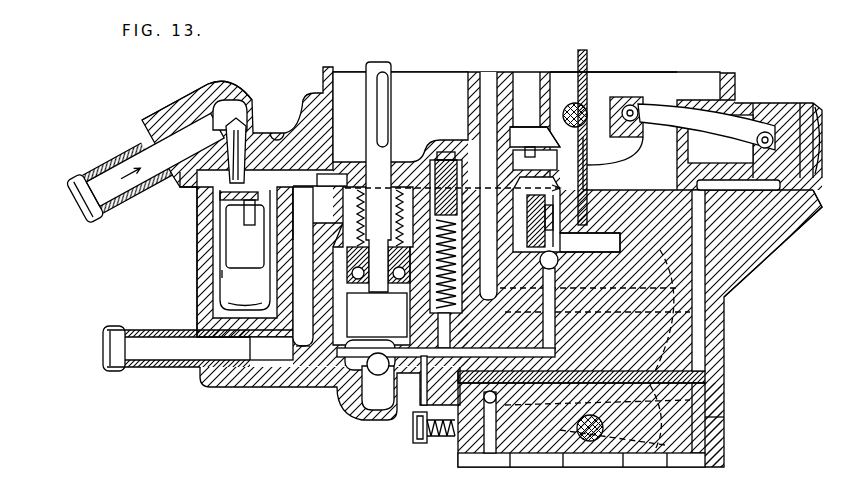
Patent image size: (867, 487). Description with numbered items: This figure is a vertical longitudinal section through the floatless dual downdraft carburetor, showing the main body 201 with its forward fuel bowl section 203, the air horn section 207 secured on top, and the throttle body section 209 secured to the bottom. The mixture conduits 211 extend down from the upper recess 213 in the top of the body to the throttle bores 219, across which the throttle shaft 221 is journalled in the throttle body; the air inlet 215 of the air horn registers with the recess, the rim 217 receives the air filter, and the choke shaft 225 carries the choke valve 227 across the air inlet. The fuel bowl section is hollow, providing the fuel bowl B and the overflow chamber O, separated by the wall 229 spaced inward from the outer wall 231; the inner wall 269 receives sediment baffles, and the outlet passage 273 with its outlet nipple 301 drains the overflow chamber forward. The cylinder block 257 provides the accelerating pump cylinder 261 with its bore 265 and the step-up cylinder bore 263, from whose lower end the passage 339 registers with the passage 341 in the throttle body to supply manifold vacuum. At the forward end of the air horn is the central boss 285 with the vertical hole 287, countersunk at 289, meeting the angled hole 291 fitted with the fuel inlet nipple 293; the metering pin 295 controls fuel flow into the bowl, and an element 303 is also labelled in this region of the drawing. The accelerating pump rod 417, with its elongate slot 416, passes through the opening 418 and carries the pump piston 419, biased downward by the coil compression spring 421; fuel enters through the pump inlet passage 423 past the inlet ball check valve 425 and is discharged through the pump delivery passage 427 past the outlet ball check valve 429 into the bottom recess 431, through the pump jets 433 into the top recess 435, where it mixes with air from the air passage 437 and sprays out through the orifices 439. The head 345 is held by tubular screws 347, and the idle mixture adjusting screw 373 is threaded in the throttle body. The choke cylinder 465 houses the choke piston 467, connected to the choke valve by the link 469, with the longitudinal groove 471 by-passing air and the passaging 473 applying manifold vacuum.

The main body 201 is at (738, 297).
The fuel bowl section 203 is at (191, 258).
The air horn section 207 is at (302, 93).
The throttle body section 209 is at (723, 440).
The mixture conduit 211 is at (697, 355).
The upper recess 213 is at (642, 210).
The air inlet 215 is at (663, 92).
The rim 217 is at (737, 83).
The throttle bore 219 is at (690, 400).
The throttle shaft 221 is at (590, 453).
The choke shaft 225 is at (587, 113).
The choke valve 227 is at (587, 53).
The wall 229 is at (277, 288).
The outer wall 231 is at (198, 232).
The cylinder block 257 is at (350, 260).
The accelerating pump cylinder 261 is at (337, 247).
The bore of the step-up cylinder 263 is at (377, 315).
The bore of the pump cylinder 265 is at (347, 323).
The inner wall 269 is at (293, 187).
The outlet passage 273 is at (267, 360).
The central boss 285 is at (233, 80).
The vertical cylindrical hole 287 is at (247, 110).
The countersink 289 is at (197, 187).
The angled hole 291 is at (210, 117).
The fuel inlet nipple 293 is at (107, 175).
The metering pin 295 is at (240, 137).
The outlet nipple 301 is at (142, 367).
The valve seat 303 is at (225, 220).
The passage 339 is at (437, 330).
The passage 341 is at (487, 440).
The head 345 is at (578, 177).
The tubular screw 347 is at (528, 153).
The idle mixture adjusting screw 373 is at (413, 440).
The elongate slot 416 is at (388, 97).
The accelerating pump rod 417 is at (393, 63).
The opening 418 is at (363, 163).
The pump piston 419 is at (347, 287).
The coil compression spring 421 is at (356, 217).
The pump inlet passage 423 is at (373, 400).
The inlet ball check valve 425 is at (367, 367).
The pump delivery passage 427 is at (420, 360).
The outlet ball check valve 429 is at (556, 265).
The bottom recess 431 is at (575, 257).
The pump jet 433 is at (563, 189).
The top recess 435 is at (573, 217).
The air passage 437 is at (488, 77).
The orifice 439 is at (583, 230).
The choke cylinder 465 is at (767, 110).
The choke piston 467 is at (800, 120).
The link 469 is at (727, 140).
The longitudinal groove 471 is at (790, 210).
The passaging 473 is at (760, 262).
The fuel bowl B is at (222, 273).
The overflow chamber O is at (303, 350).